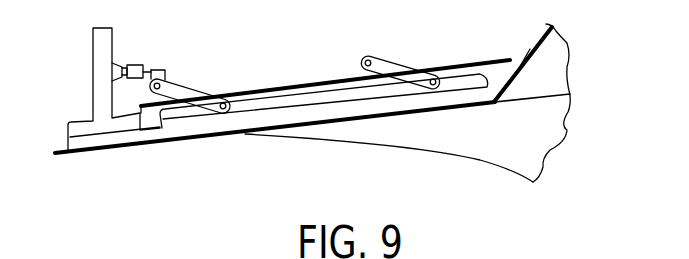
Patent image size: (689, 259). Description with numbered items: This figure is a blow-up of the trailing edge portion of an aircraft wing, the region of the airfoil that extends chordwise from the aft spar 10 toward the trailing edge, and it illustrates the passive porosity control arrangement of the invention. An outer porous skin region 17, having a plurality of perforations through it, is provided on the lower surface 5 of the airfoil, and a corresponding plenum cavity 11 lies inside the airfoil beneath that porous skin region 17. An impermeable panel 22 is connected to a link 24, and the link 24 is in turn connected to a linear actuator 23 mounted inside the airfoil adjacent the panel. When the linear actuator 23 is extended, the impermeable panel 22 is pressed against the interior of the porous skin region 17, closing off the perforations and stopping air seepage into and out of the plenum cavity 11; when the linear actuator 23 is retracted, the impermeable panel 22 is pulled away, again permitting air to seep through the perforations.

The lower surface 5 is at (97, 156).
The aft spar 10 is at (112, 33).
The plenum cavity 11 is at (253, 124).
The outer porous skin region 17 is at (251, 128).
The impermeable panel 22 is at (283, 117).
The linear actuator 23 is at (138, 65).
The link 24 is at (178, 88).